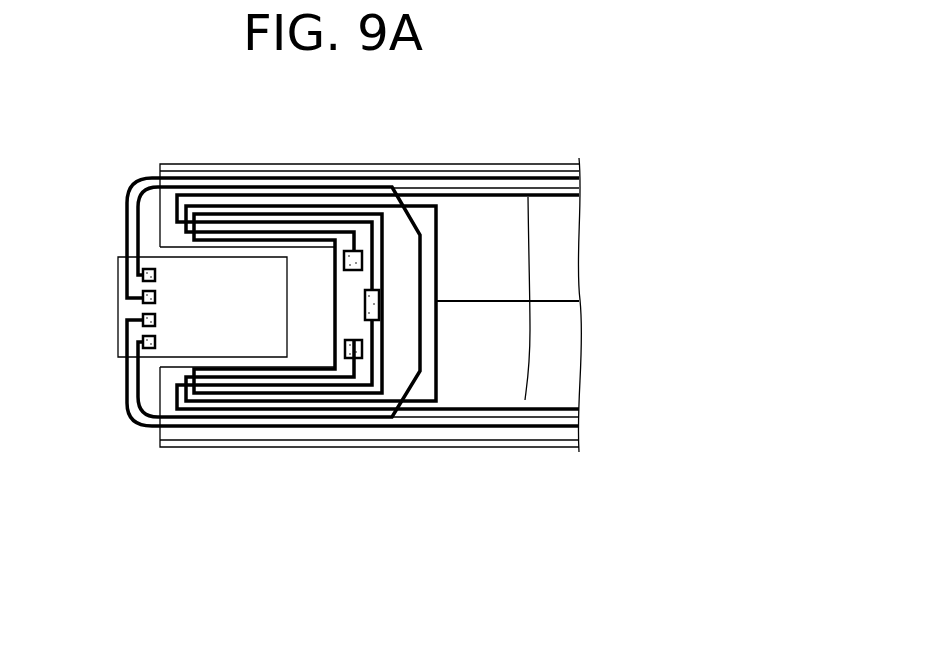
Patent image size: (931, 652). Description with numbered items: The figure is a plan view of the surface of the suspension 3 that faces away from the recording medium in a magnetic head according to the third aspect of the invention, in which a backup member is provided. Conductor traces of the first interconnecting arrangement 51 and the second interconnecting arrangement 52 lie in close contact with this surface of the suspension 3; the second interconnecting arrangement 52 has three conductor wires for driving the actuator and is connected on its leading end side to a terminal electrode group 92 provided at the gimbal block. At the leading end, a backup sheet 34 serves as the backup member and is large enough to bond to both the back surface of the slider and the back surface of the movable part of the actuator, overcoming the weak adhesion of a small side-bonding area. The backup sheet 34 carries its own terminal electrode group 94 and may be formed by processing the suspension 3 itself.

The suspension 3 is at (562, 232).
The backup sheet 34 is at (125, 307).
The first interconnecting arrangement 51 is at (423, 178).
The second interconnecting arrangement 52 is at (460, 410).
The terminal electrode group 92 is at (381, 308).
The terminal electrode group 94 is at (157, 280).